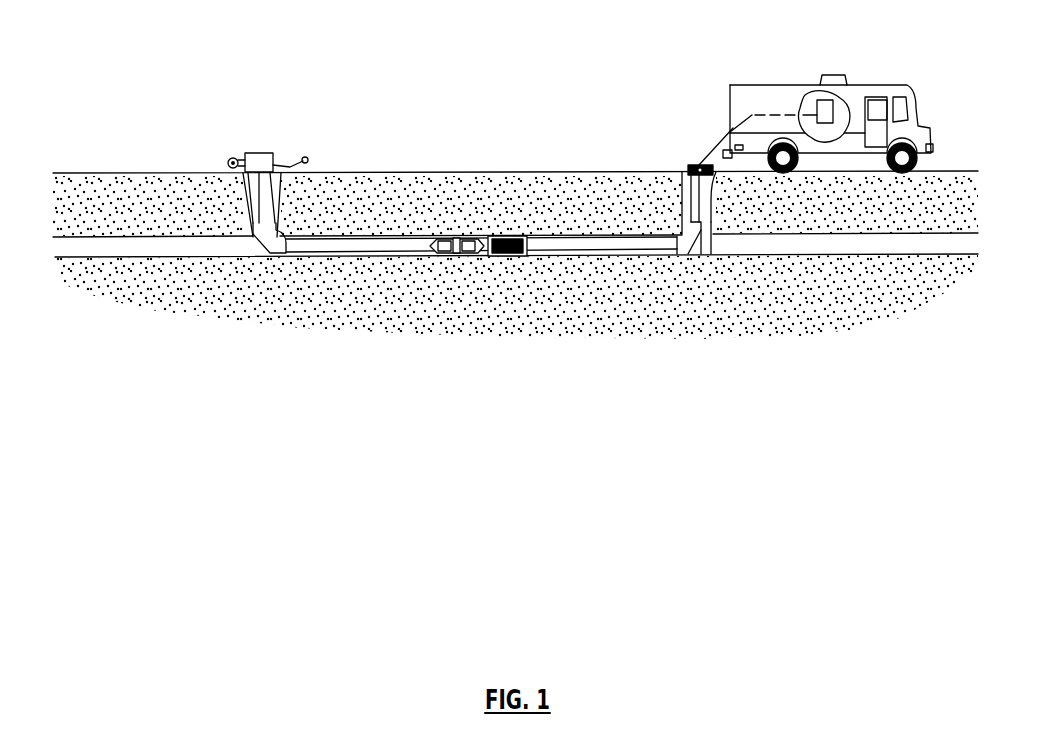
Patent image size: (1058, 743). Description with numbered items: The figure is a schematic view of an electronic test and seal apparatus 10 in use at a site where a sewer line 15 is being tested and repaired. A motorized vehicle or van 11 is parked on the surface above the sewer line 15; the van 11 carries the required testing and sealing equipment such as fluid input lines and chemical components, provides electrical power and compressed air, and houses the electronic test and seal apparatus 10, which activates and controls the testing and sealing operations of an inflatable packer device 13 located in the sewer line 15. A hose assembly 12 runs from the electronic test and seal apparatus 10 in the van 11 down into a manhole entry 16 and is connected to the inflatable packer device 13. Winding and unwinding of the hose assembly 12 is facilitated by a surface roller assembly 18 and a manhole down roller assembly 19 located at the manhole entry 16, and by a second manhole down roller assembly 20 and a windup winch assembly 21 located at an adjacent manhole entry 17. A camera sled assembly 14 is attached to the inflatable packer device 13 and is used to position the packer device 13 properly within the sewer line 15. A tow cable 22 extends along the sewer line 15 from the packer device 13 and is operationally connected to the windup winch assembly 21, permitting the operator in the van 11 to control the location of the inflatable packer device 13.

The electronic test and seal apparatus 10 is at (842, 113).
The motorized vehicle or van 11 is at (765, 97).
The hose assembly 12 is at (713, 142).
The inflatable packer device 13 is at (508, 255).
The camera sled assembly 14 is at (455, 253).
The sewer line 15 is at (718, 249).
The manhole entry 16 is at (690, 188).
The adjacent manhole entry 17 is at (250, 202).
The surface roller assembly 18 is at (690, 167).
The manhole down roller assembly 19 is at (683, 255).
The manhole down roller assembly 20 is at (270, 239).
The windup winch assembly 21 is at (260, 153).
The tow cable 22 is at (370, 253).